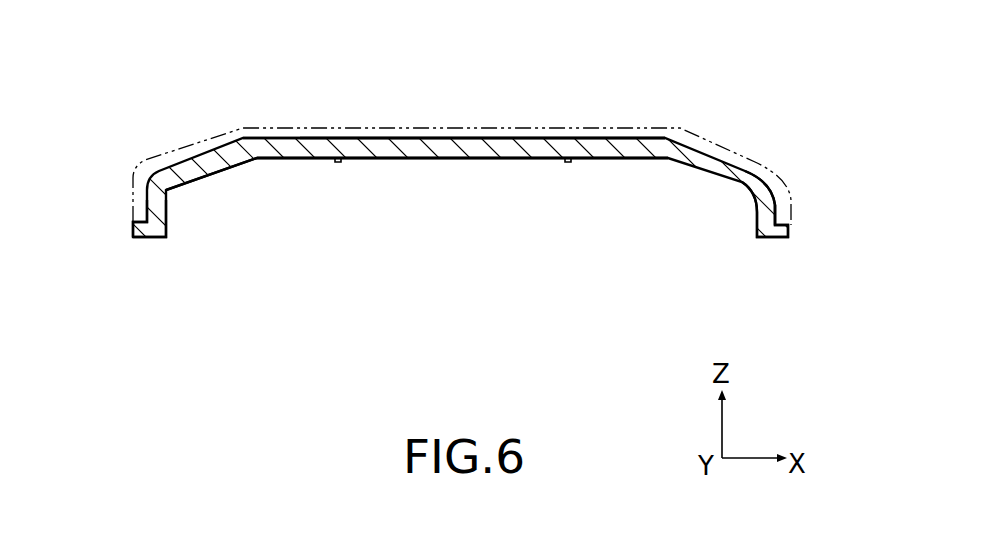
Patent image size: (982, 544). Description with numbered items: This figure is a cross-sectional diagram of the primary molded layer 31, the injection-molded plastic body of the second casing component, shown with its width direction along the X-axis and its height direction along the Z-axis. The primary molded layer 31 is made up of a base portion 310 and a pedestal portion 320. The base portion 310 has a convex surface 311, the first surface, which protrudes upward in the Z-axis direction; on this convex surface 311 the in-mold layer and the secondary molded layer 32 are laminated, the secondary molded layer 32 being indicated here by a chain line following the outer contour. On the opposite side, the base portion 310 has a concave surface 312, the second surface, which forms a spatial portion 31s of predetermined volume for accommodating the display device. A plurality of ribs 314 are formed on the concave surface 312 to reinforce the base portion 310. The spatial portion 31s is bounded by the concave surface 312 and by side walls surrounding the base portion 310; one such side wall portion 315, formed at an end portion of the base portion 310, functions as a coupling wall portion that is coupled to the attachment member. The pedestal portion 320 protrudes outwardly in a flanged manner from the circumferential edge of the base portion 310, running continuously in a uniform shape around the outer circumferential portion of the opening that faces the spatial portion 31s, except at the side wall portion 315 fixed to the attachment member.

The primary molded layer 31 is at (713, 98).
The spatial portion 31s is at (245, 185).
The secondary molded layer 32 is at (192, 148).
The base portion 310 is at (345, 127).
The convex surface 311 is at (498, 135).
The concave surface 312 is at (438, 160).
The ribs 314 is at (338, 162).
The side wall portion 315 is at (758, 226).
The pedestal portion 320 is at (133, 228).